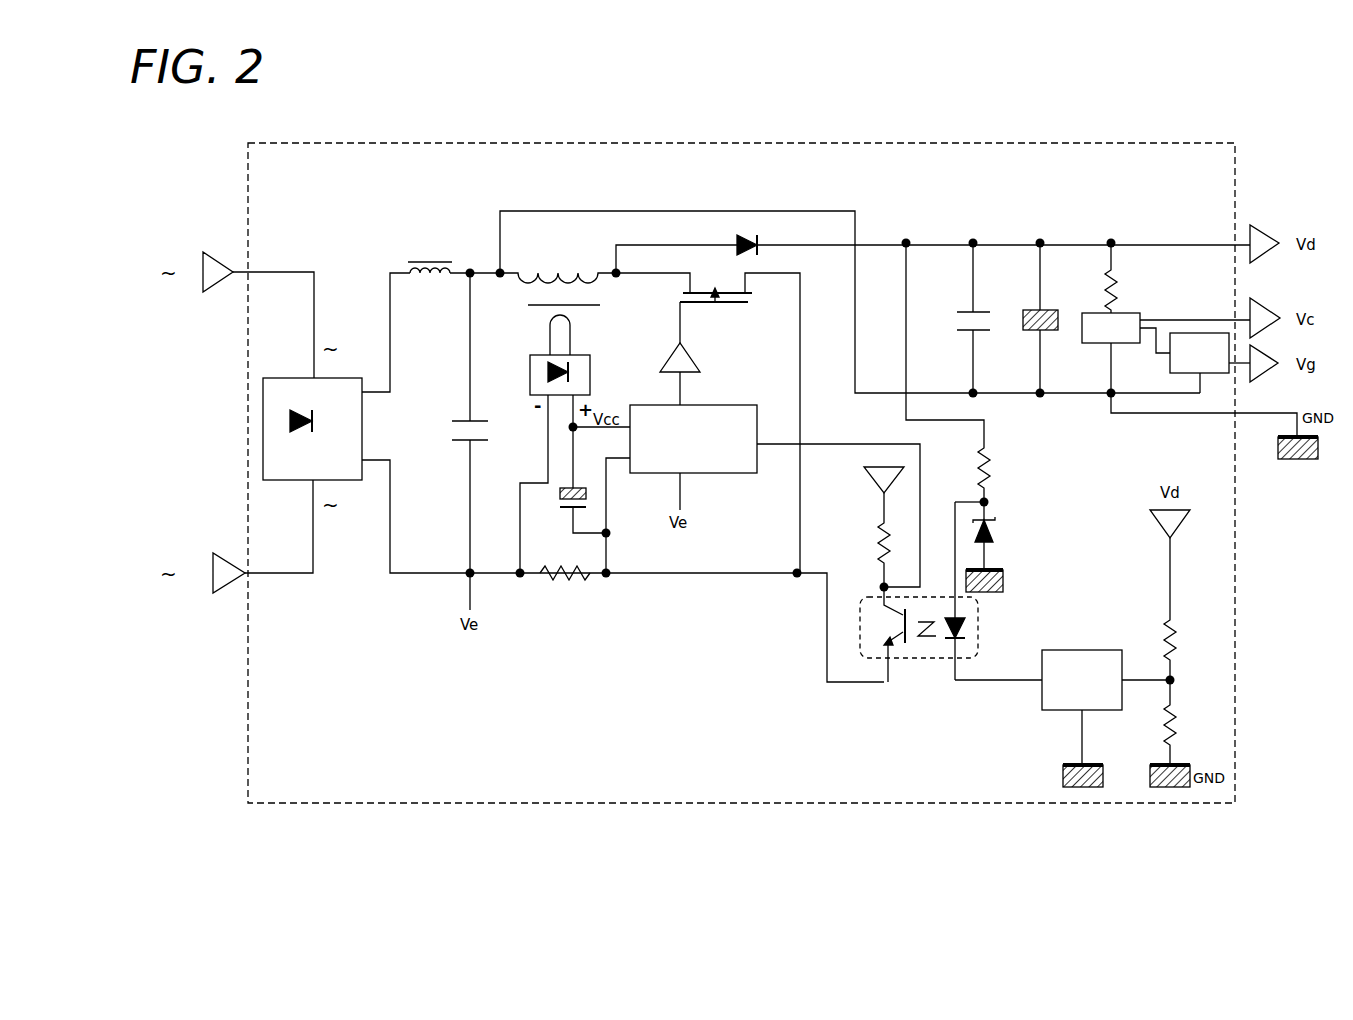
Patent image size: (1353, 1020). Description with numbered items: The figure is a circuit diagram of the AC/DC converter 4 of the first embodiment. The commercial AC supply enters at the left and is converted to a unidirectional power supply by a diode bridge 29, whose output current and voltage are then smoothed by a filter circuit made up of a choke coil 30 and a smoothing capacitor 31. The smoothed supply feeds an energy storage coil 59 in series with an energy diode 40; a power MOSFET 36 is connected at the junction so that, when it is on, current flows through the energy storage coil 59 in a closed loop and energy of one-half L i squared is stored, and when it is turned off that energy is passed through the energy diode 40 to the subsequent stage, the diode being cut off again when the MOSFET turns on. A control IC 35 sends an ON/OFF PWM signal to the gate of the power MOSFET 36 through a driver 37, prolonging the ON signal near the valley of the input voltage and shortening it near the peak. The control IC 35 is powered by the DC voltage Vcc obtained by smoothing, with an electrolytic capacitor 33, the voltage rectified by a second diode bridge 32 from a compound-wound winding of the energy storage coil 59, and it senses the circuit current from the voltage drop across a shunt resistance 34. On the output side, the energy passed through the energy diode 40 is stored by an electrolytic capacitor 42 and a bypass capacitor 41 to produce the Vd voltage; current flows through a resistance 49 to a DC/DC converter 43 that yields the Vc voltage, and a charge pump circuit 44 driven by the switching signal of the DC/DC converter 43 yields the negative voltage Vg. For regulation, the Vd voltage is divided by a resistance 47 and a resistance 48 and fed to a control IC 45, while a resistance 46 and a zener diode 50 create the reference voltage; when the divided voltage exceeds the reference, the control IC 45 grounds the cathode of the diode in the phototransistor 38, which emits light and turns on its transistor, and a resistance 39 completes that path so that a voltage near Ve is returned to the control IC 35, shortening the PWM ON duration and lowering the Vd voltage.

The AC/DC converter 4 is at (535, 132).
The diode bridge 29 is at (258, 450).
The choke coil 30 is at (437, 252).
The smoothing capacitor 31 is at (455, 443).
The diode bridge 32 is at (595, 370).
The electrolytic capacitor 33 is at (565, 510).
The shunt resistance 34 is at (557, 590).
The control IC 35 is at (733, 483).
The power MOSFET 36 is at (712, 310).
The driver 37 is at (712, 370).
The phototransistor 38 is at (918, 668).
The resistor 39 is at (870, 548).
The energy diode 40 is at (745, 232).
The bypass capacitor 41 is at (965, 318).
The electrolytic capacitor 42 is at (1025, 318).
The DC/DC converter 43 is at (1140, 312).
The charge pump circuit 44 is at (1175, 330).
The control IC 45 is at (1085, 645).
The resistance 46 is at (1005, 472).
The resistance 47 is at (1190, 637).
The resistance 48 is at (1190, 720).
The resistance 49 is at (1100, 292).
The zener diode 50 is at (1005, 535).
The energy storage coil 59 is at (553, 263).